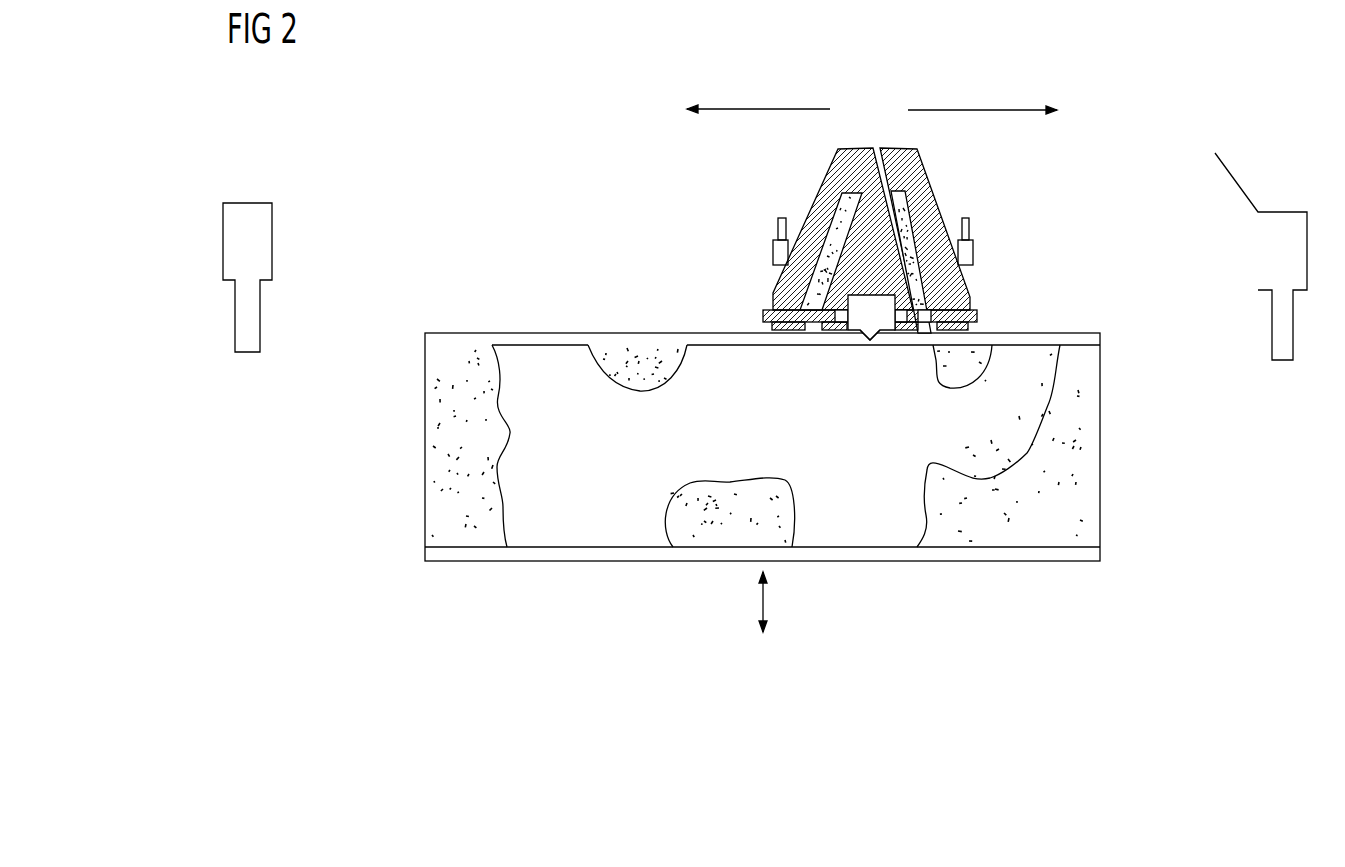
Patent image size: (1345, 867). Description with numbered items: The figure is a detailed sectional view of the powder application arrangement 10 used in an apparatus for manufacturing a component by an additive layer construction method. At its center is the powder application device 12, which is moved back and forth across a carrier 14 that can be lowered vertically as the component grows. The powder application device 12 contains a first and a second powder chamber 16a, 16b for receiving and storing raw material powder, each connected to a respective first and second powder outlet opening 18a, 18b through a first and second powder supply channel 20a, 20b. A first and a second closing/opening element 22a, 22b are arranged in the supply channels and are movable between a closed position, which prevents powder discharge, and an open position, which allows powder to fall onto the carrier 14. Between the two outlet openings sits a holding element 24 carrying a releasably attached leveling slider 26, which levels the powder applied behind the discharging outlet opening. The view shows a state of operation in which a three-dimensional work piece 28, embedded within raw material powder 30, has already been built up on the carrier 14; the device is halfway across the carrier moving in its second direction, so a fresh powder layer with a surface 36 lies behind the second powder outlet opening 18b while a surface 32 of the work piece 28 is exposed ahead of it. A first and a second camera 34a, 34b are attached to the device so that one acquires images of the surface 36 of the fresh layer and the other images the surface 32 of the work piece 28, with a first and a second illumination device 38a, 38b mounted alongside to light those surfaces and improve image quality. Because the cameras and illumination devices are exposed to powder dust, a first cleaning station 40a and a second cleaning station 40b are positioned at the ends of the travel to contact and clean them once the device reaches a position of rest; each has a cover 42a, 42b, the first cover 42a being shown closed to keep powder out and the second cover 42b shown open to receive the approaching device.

The powder application arrangement 10 is at (1113, 63).
The powder application device 12 is at (920, 150).
The carrier 14 is at (1100, 561).
The first powder chamber 16a is at (822, 199).
The second powder chamber 16b is at (908, 207).
The first powder outlet opening 18a is at (807, 331).
The second powder outlet opening 18b is at (937, 334).
The first powder supply channel 20a is at (778, 289).
The second powder supply channel 20b is at (962, 288).
The first closing/opening element 22a is at (763, 313).
The second closing/opening element 22b is at (978, 313).
The holding element 24 is at (866, 306).
The leveling slider 26 is at (872, 341).
The work piece 28 is at (590, 542).
The raw material powder 30 is at (463, 333).
The surface of the work piece 32 is at (1045, 345).
The first camera 34a is at (771, 252).
The second camera 34b is at (975, 252).
The surface of the fresh raw material powder layer 36 is at (575, 333).
The first illumination device 38a is at (774, 227).
The second illumination device 38b is at (972, 227).
The first cleaning station 40a is at (244, 204).
The second cleaning station 40b is at (1290, 211).
The first cover 42a is at (275, 240).
The second cover 42b is at (1240, 175).